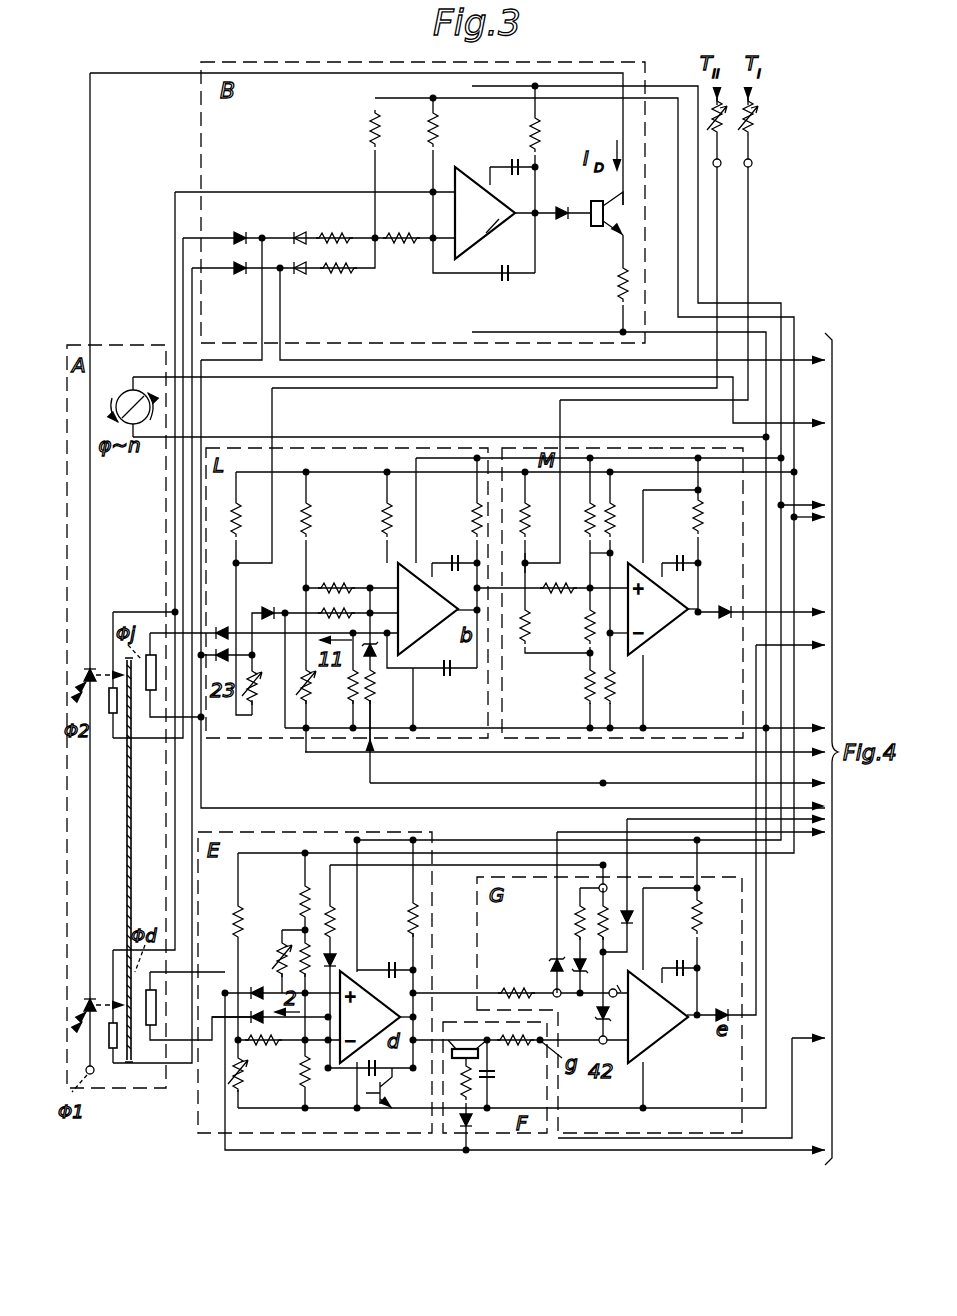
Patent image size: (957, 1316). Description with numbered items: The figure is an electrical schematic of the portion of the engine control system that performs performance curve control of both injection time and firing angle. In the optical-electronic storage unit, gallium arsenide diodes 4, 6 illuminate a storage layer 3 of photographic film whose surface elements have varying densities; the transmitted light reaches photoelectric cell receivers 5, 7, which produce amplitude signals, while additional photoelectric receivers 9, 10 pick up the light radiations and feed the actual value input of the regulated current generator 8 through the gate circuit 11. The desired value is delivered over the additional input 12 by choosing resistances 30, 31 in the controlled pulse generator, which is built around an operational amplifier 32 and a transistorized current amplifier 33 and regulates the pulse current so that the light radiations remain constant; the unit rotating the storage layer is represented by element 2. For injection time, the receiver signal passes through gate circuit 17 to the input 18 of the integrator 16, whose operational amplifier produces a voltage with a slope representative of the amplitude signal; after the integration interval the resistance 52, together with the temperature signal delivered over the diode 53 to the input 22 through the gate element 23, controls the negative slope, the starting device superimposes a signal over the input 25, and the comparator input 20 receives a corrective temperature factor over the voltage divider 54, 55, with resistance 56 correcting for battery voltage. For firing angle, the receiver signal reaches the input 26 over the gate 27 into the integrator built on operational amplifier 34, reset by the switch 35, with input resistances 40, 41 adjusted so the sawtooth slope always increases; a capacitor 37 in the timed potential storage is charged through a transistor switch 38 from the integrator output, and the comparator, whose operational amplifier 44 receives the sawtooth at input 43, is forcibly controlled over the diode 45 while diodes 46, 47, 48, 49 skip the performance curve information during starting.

The unit C drive element 2 is at (129, 391).
The storage layer 3 is at (132, 882).
The gallium arsenide diode 4 is at (86, 668).
The photoelectric cell receiver 5 is at (147, 694).
The gallium arsenide diode 6 is at (89, 996).
The photoelectric cell receiver 7 is at (158, 1006).
The regulated current generator 8 is at (466, 258).
The additional photoelectric receiver 9 is at (118, 1040).
The additional photoelectric receiver 10 is at (111, 720).
The gate circuit 11 is at (264, 226).
The additional input 12 is at (378, 242).
The integrator 16 is at (416, 580).
The gate circuit 17 is at (219, 622).
The integrator input 18 is at (385, 672).
The comparator input 20 is at (527, 561).
The integrator input 22 is at (370, 584).
The gate circuit element 23 is at (240, 683).
The integrator input 25 is at (372, 768).
The integrator input 26 is at (327, 1048).
The gate 27 is at (278, 980).
The resistance 30 is at (340, 232).
The resistance 31 is at (336, 276).
The operational amplifier 32 is at (492, 225).
The transistorized current amplifier 33 is at (612, 215).
The operational amplifier 34 is at (395, 962).
The switch 35 is at (394, 1096).
The capacitor 37 is at (503, 1076).
The transistor switch 38 is at (463, 1046).
The resistance 40 is at (247, 1073).
The resistance 41 is at (283, 948).
The comparator input 43 is at (618, 986).
The operational amplifier 44 is at (660, 1040).
The diode 45 is at (553, 960).
The diode 46 is at (340, 950).
The diode 47 is at (575, 968).
The diode 48 is at (598, 1013).
The diode 49 is at (634, 917).
The resistance 52 is at (311, 690).
The diode 53 is at (268, 607).
The voltage divider resistor 54 is at (588, 628).
The voltage divider resistor 55 is at (570, 587).
The resistance 56 is at (588, 520).